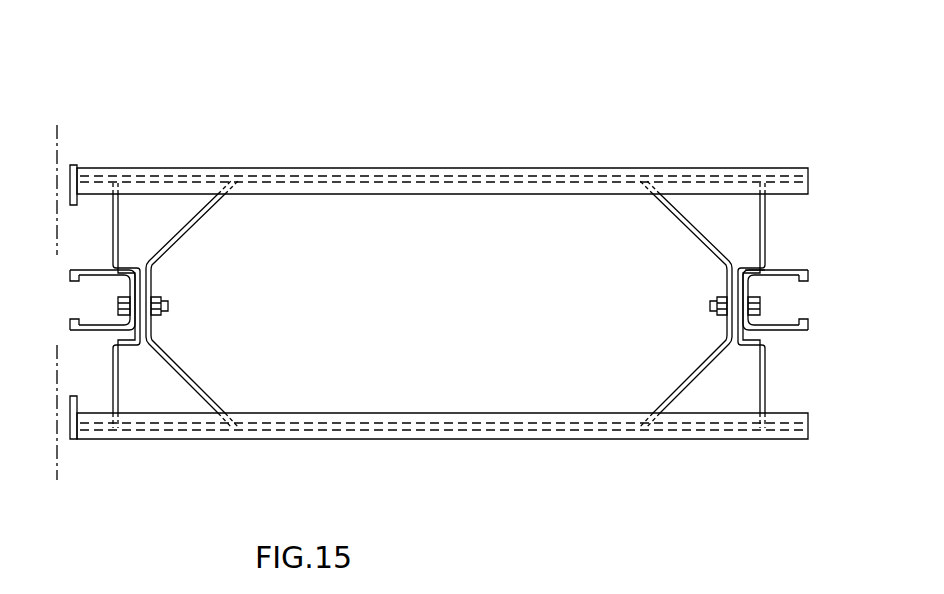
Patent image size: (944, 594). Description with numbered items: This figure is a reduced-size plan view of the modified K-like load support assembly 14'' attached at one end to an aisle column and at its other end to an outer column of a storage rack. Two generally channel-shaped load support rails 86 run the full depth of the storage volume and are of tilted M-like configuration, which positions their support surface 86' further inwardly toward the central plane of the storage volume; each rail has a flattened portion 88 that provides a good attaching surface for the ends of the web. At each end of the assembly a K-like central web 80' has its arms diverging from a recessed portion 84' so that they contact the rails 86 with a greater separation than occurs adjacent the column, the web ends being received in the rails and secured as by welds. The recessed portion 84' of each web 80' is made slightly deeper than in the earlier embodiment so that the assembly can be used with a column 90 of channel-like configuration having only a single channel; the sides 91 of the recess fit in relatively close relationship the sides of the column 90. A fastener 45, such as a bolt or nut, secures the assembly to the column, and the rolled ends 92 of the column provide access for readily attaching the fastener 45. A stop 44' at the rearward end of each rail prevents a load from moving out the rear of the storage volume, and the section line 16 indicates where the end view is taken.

The load support assembly 14'' is at (442, 162).
The section line 16 is at (57, 143).
The stop 44' is at (48, 290).
The fastener 45 is at (162, 307).
The central web 80' is at (439, 303).
The recessed portion 84' is at (781, 250).
The load support rail 86 is at (442, 307).
The support surface 86' is at (443, 306).
The flattened portion 88 is at (378, 180).
The column 90 is at (88, 269).
The sides of recessed portion 91 is at (125, 283).
The rolled ends 92 is at (70, 273).